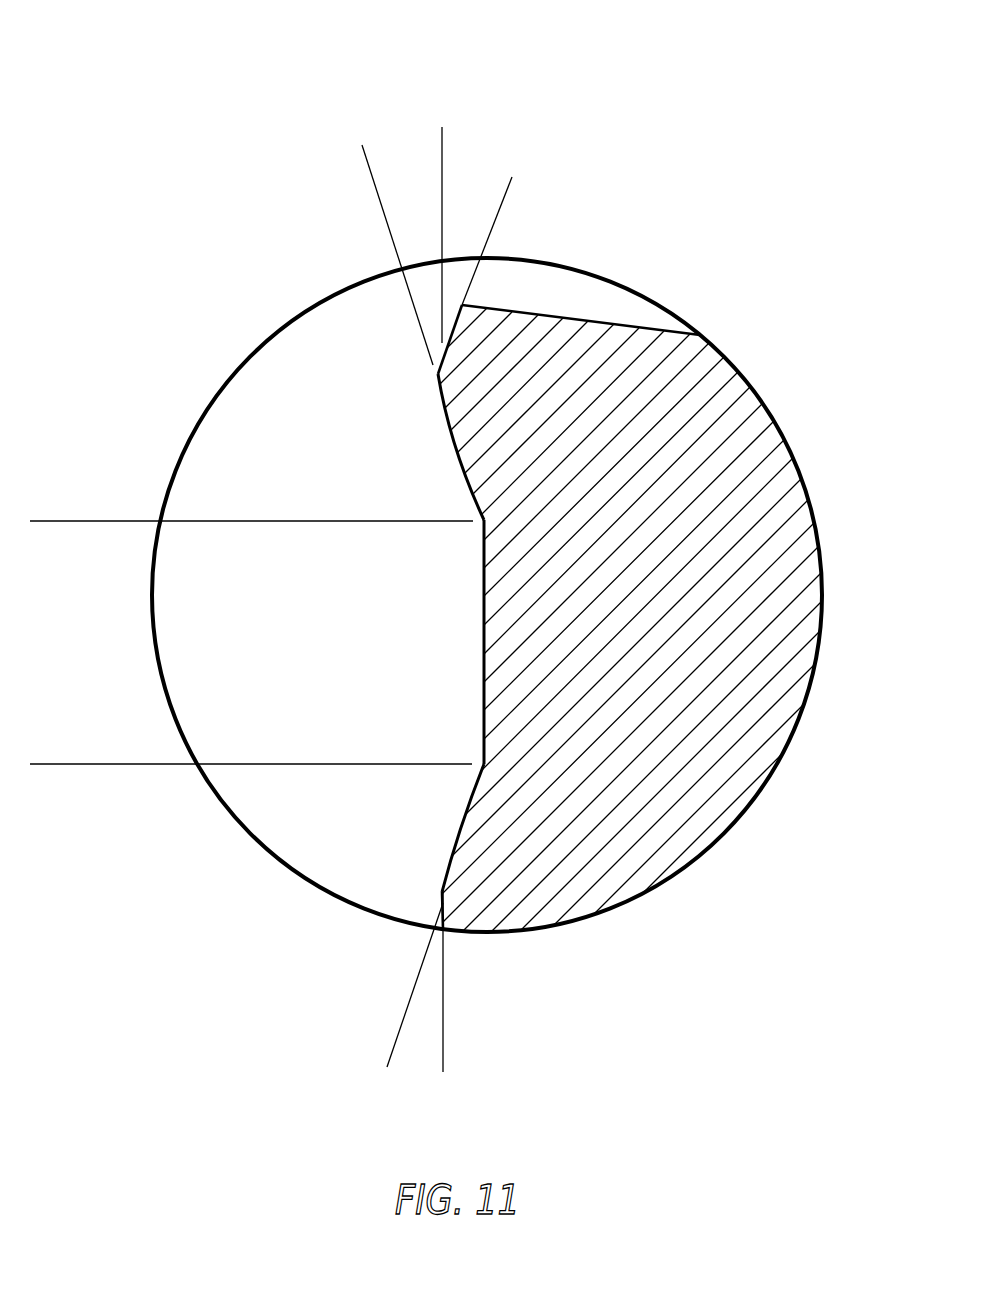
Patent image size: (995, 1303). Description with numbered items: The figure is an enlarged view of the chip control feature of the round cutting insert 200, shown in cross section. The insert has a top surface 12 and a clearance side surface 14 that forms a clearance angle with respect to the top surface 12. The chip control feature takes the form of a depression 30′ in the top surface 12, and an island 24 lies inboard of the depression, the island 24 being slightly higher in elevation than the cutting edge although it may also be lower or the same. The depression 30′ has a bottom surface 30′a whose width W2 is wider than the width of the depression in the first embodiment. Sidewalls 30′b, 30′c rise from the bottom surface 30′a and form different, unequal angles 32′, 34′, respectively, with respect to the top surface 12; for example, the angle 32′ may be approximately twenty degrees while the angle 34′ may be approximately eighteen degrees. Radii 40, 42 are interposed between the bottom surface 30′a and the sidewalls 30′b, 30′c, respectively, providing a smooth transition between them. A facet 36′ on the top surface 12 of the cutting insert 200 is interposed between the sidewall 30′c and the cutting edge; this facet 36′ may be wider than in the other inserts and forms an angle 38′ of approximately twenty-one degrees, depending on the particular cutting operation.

The round cutting insert 200 is at (178, 97).
The top surface 12 is at (357, 413).
The clearance side surface 14 is at (580, 305).
The island 24 is at (443, 910).
The depression 30′ is at (340, 715).
The bottom surface of the depression 30′a is at (483, 642).
The sidewall 30′b is at (457, 840).
The sidewall 30′c is at (453, 430).
The angle 32′ is at (442, 1055).
The angle 34′ is at (441, 142).
The facet 36′ is at (450, 337).
The angle 38′ is at (503, 188).
The radius 40 is at (487, 764).
The radius 42 is at (487, 520).
The width W2 is at (81, 522).